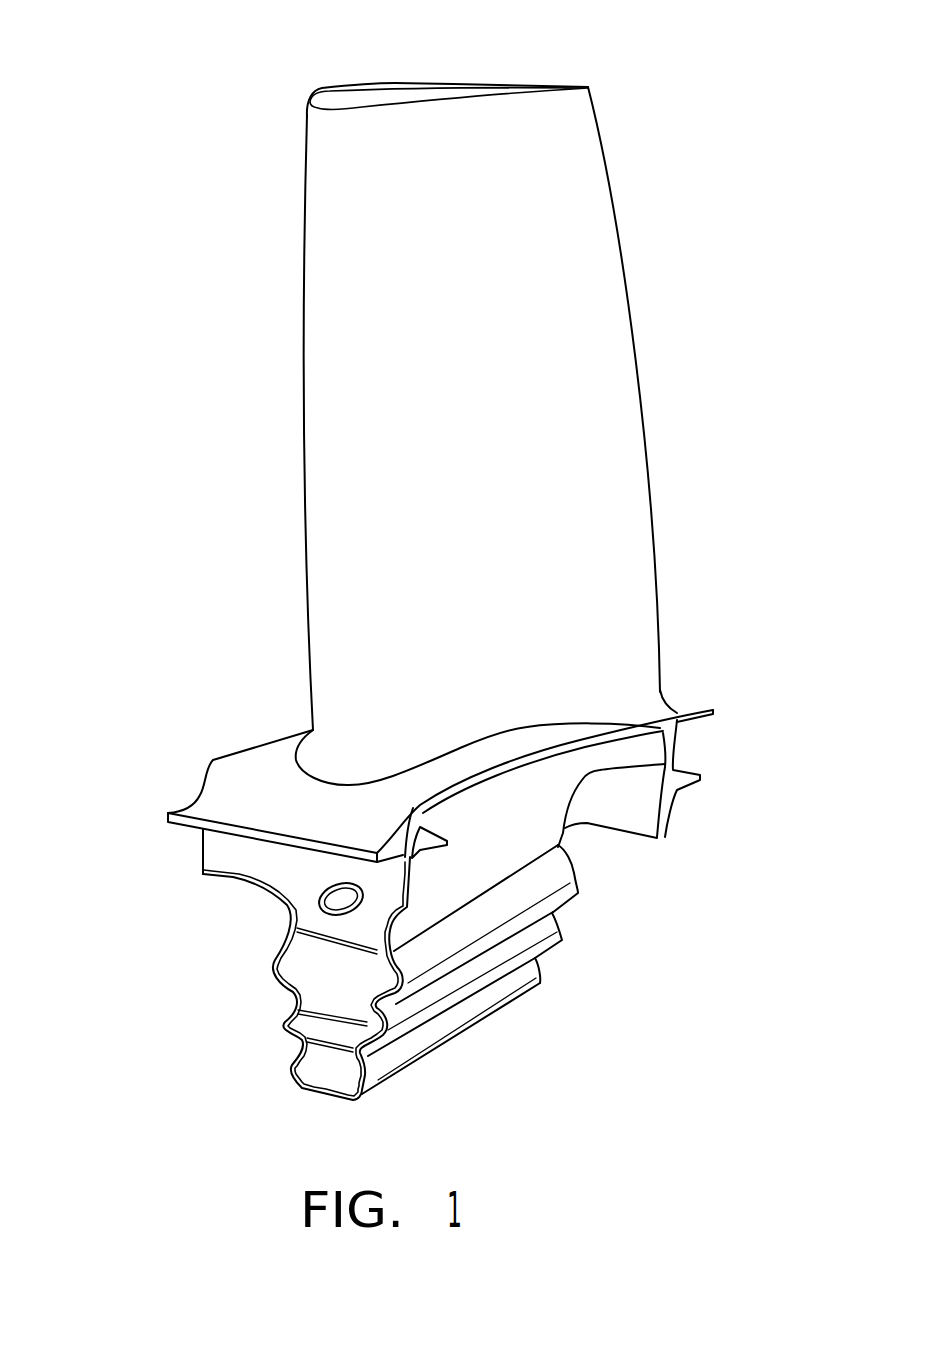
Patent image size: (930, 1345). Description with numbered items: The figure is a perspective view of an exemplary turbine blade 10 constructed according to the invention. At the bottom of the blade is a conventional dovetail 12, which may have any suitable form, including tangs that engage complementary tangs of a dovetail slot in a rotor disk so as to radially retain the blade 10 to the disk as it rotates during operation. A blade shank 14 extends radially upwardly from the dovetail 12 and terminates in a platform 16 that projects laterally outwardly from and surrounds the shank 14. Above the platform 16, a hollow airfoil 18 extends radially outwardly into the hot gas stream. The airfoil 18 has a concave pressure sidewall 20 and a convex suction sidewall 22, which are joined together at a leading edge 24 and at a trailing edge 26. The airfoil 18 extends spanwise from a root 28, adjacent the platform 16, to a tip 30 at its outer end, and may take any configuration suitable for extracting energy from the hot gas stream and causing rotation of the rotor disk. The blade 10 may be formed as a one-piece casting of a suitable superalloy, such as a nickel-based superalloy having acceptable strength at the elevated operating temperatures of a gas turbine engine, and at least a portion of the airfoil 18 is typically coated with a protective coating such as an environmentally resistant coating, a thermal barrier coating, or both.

The turbine blade 10 is at (736, 188).
The dovetail 12 is at (440, 1023).
The blade shank 14 is at (300, 893).
The platform 16 is at (256, 753).
The hollow airfoil 18 is at (188, 308).
The concave pressure sidewall 20 is at (493, 428).
The convex suction sidewall 22 is at (342, 412).
The leading edge 24 is at (304, 497).
The trailing edge 26 is at (648, 432).
The root 28 is at (527, 727).
The tip 30 is at (509, 83).